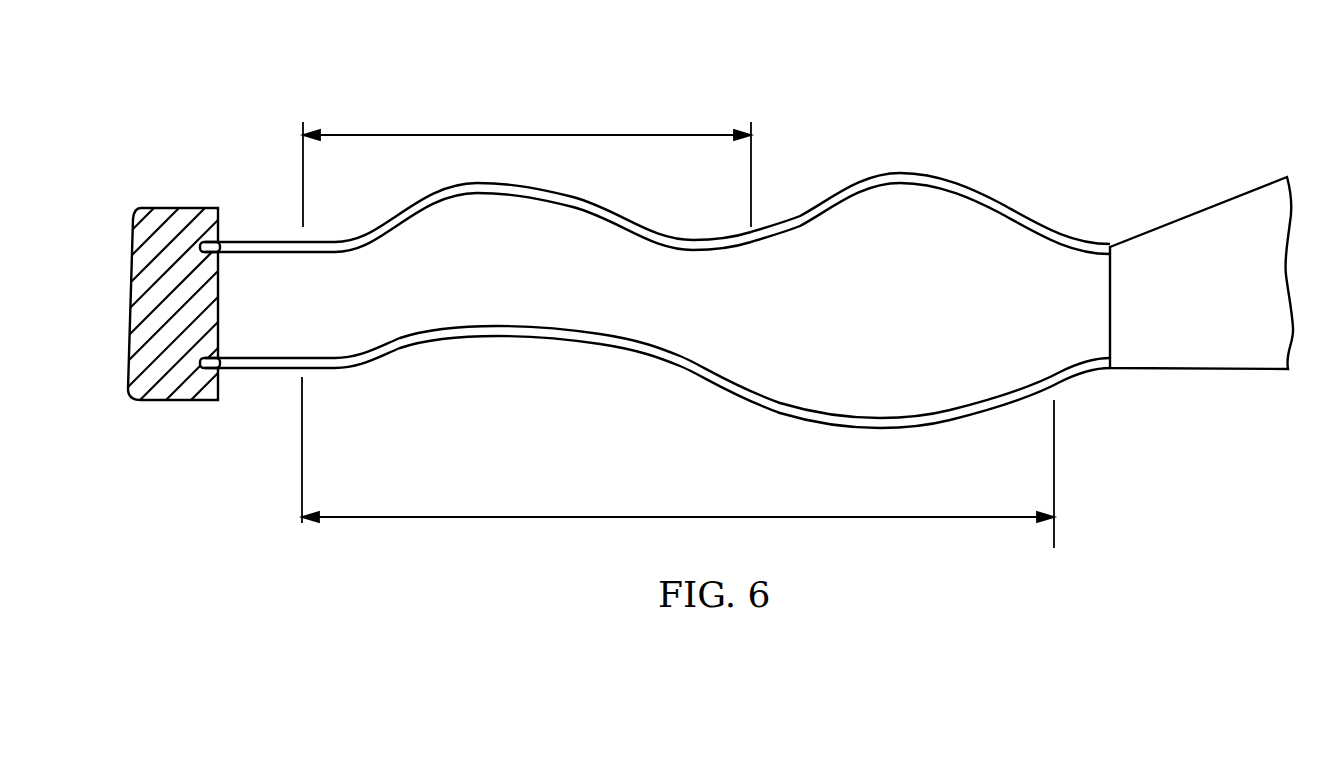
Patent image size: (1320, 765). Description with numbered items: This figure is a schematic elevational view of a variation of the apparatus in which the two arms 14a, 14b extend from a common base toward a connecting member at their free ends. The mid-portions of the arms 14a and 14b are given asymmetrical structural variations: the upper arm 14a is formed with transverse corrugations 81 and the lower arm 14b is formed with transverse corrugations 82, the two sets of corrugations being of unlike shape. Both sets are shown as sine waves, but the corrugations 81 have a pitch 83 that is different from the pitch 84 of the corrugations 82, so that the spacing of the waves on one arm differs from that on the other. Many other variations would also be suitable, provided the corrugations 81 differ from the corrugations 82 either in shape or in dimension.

The transverse corrugations 81 is at (573, 197).
The transverse corrugations 82 is at (676, 353).
The pitch 83 is at (453, 135).
The pitch 84 is at (480, 517).
The arm 14a is at (1025, 207).
The arm 14b is at (1018, 377).